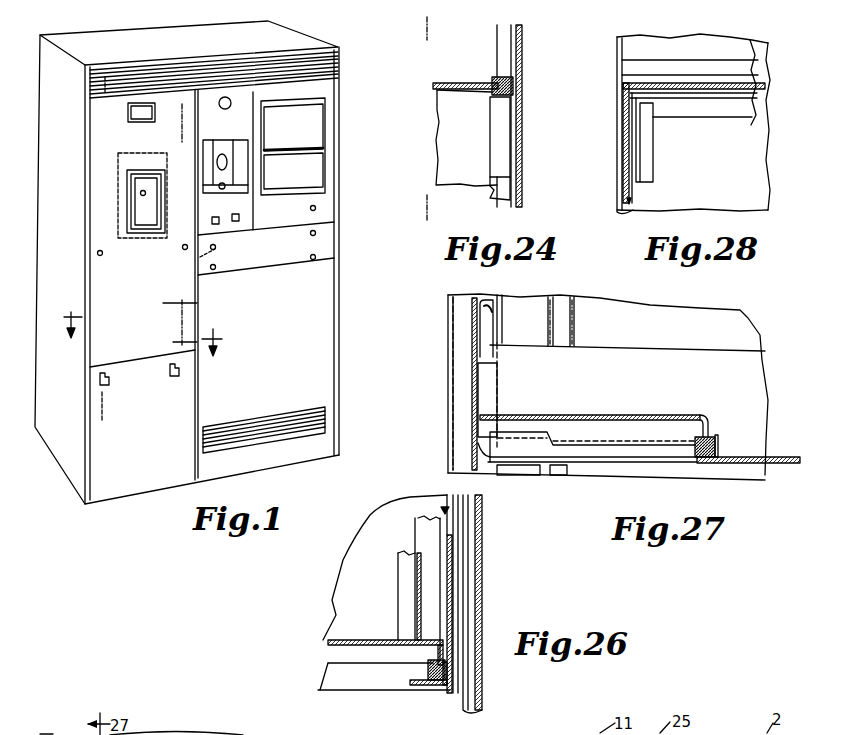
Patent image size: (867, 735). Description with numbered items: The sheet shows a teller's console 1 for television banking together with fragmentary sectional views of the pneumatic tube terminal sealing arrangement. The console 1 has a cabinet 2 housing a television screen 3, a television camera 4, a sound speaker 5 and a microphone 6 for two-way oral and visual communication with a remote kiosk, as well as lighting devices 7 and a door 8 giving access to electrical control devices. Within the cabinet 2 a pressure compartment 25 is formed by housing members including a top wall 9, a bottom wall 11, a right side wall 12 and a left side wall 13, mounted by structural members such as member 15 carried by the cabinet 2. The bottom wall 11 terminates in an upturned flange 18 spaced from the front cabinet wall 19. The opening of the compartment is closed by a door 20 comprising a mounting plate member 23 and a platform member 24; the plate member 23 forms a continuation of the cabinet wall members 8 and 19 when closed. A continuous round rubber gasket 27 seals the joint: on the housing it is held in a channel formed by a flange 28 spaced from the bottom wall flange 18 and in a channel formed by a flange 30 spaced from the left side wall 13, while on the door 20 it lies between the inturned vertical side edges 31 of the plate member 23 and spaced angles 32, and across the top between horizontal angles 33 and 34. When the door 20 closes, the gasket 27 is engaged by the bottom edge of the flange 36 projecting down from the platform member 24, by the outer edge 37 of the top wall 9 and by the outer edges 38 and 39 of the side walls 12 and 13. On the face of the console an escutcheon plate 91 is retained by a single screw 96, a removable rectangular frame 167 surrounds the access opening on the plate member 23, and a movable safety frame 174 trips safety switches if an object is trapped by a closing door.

In FIG. 1, the console 1 is at (60, 478).
In FIG. 1, the cabinet 2 is at (318, 300).
In FIG. 27, the cabinet 2 is at (757, 323).
In FIG. 26, the cabinet 2 is at (484, 605).
In FIG. 1, the television screen 3 is at (312, 132).
In FIG. 1, the television camera 4 is at (224, 160).
In FIG. 1, the sound speaker 5 is at (139, 117).
In FIG. 1, the microphone 6 is at (232, 102).
In FIG. 1, the lighting devices 7 is at (301, 65).
In FIG. 1, the door 8 is at (97, 83).
In FIG. 24, the top wall 9 is at (455, 83).
In FIG. 28, the top wall 9 is at (690, 84).
In FIG. 27, the bottom wall 11 is at (782, 458).
In FIG. 24, the right side wall 12 is at (445, 133).
In FIG. 28, the right side wall 12 is at (620, 133).
In FIG. 27, the left side wall 13 is at (685, 360).
In FIG. 26, the left side wall 13 is at (452, 567).
In FIG. 27, the structural member 15 is at (543, 320).
In FIG. 27, the upturned flange 18 is at (698, 443).
In FIG. 1, the front cabinet wall 19 is at (136, 476).
In FIG. 1, the door 20 is at (104, 156).
In FIG. 1, the mounting plate member 23 is at (147, 289).
In FIG. 24, the mounting plate member 23 is at (523, 37).
In FIG. 28, the mounting plate member 23 is at (762, 158).
In FIG. 27, the mounting plate member 23 is at (472, 347).
In FIG. 26, the mounting plate member 23 is at (365, 562).
In FIG. 1, the platform member 24 is at (194, 110).
In FIG. 27, the platform member 24 is at (613, 415).
In FIG. 26, the platform member 24 is at (348, 638).
In FIG. 1, the pressure compartment 25 is at (143, 326).
In FIG. 24, the gasket 27 is at (522, 87).
In FIG. 28, the gasket 27 is at (770, 87).
In FIG. 27, the gasket 27 is at (485, 323).
In FIG. 26, the gasket 27 is at (445, 508).
In FIG. 24, the flange 28 is at (445, 24).
In FIG. 27, the flange 28 is at (719, 437).
In FIG. 26, the flange 30 is at (425, 684).
In FIG. 24, the inturned vertical side edge 31 is at (504, 40).
In FIG. 28, the inturned vertical side edge 31 is at (618, 169).
In FIG. 27, the inturned vertical side edge 31 is at (493, 296).
In FIG. 26, the inturned vertical side edge 31 is at (457, 523).
In FIG. 24, the angle 32 is at (497, 152).
In FIG. 28, the angle 32 is at (648, 160).
In FIG. 27, the angle 32 is at (488, 382).
In FIG. 26, the angle 32 is at (428, 529).
In FIG. 24, the angle 33 is at (502, 78).
In FIG. 28, the angle 33 is at (735, 67).
In FIG. 24, the angle 34 is at (500, 99).
In FIG. 28, the angle 34 is at (735, 108).
In FIG. 27, the flange 36 is at (567, 430).
In FIG. 26, the flange 36 is at (427, 650).
In FIG. 24, the outer edge 37 is at (490, 91).
In FIG. 24, the outer edge 38 is at (496, 188).
In FIG. 27, the outer edge 39 is at (495, 350).
In FIG. 1, the escutcheon plate 91 is at (141, 211).
In FIG. 1, the screw 96 is at (141, 193).
In FIG. 1, the rectangular frame 167 is at (138, 170).
In FIG. 1, the movable frame member 174 is at (150, 203).